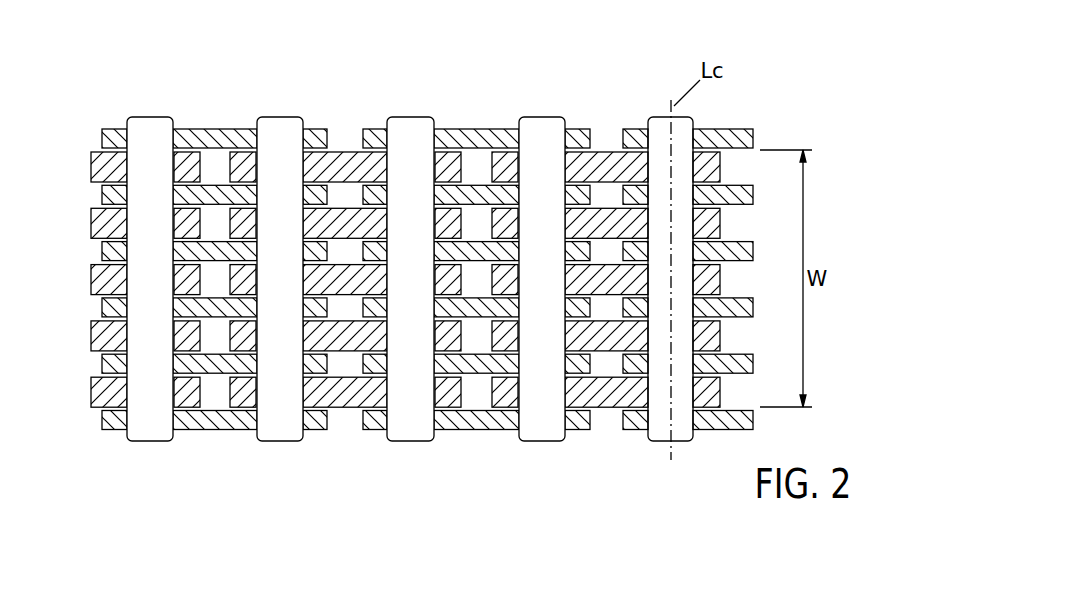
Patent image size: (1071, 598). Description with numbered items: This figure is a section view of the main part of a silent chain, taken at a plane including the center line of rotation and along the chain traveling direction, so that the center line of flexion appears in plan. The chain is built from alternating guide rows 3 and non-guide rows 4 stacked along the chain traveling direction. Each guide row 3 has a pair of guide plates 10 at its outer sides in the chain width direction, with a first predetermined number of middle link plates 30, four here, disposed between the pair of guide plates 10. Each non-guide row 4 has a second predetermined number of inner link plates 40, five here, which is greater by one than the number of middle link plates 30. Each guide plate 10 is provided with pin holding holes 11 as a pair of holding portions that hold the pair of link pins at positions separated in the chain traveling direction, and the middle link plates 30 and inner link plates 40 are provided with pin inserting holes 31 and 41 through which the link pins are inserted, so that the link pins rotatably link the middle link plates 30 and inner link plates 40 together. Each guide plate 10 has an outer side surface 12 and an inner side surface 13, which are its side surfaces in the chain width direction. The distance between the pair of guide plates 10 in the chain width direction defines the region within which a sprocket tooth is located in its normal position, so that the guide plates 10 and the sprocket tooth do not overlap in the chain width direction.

The guide row 3 is at (103, 108).
The non-guide row 4 is at (228, 437).
The guide plate 10 is at (213, 129).
The pin holding hole 11 is at (400, 130).
The outer side surface 12 is at (117, 128).
The inner side surface 13 is at (225, 408).
The middle link plate 30 is at (98, 251).
The pin inserting hole 31 is at (172, 196).
The inner link plate 40 is at (350, 212).
The pin inserting hole 41 is at (300, 394).